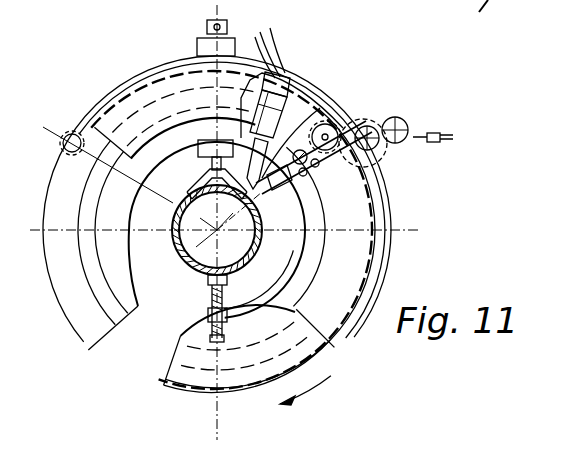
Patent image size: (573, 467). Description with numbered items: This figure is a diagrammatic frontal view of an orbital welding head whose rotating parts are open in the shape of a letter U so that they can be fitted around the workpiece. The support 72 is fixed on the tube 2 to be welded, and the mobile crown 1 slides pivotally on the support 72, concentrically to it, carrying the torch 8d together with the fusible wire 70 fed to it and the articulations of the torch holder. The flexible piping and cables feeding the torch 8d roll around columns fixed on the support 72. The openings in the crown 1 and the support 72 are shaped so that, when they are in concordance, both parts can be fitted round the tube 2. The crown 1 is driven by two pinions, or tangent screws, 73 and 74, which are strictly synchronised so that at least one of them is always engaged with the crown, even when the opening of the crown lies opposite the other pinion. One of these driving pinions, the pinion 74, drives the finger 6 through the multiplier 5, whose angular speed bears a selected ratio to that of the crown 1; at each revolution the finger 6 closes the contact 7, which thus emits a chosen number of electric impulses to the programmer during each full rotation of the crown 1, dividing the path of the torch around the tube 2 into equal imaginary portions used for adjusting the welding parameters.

The mobile crown 1 is at (178, 337).
The tube 2 is at (185, 254).
The multiplier pinion 5 is at (392, 118).
The finger 6 is at (417, 127).
The contact 7 is at (442, 130).
The torch 8d is at (300, 127).
The fusible wire 70 is at (258, 196).
The support 72 is at (88, 323).
The driving pinion 73 is at (72, 130).
The driving pinion 74 is at (378, 150).